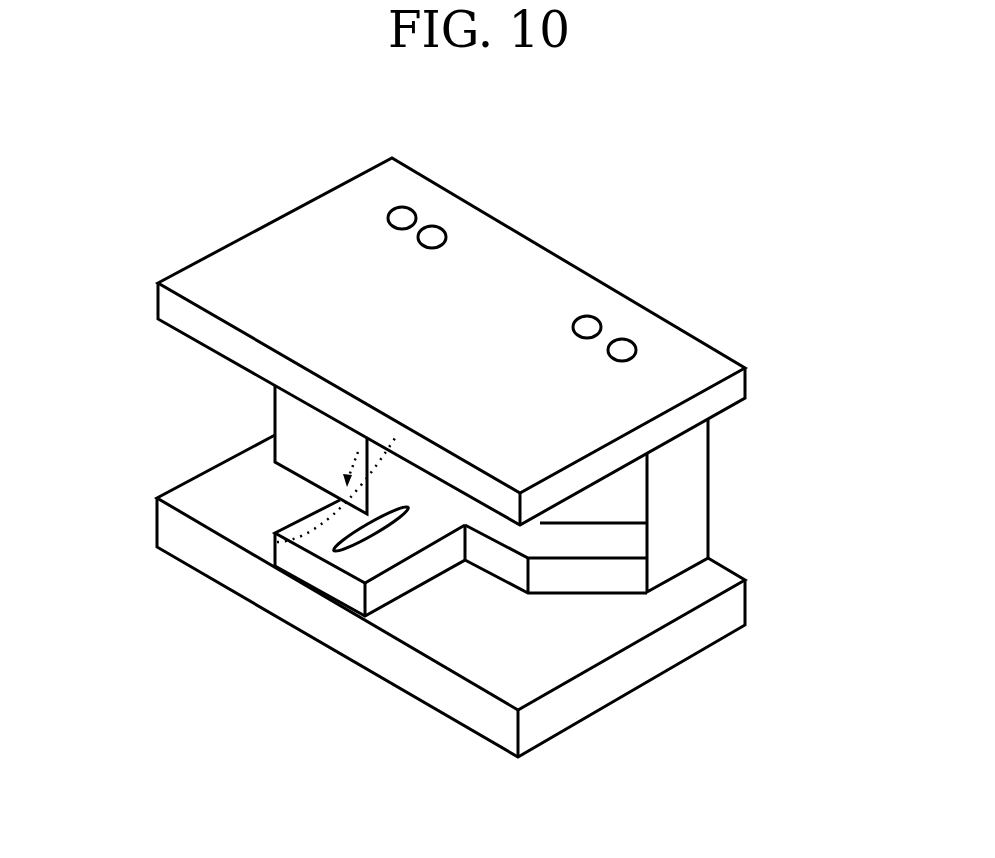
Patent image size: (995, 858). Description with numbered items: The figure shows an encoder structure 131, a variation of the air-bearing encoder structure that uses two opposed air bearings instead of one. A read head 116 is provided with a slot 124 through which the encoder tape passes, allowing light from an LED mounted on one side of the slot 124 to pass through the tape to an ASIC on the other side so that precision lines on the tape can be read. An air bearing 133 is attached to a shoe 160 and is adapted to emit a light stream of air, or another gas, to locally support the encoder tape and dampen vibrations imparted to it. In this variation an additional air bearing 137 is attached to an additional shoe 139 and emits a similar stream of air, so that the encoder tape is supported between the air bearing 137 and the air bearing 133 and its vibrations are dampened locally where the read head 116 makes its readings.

The encoder structure 131 is at (193, 200).
The additional shoe 139 is at (730, 392).
The read head 116 is at (710, 532).
The shoe 160 is at (567, 698).
The air bearing 133 is at (337, 552).
The slot 124 is at (560, 542).
The additional air bearing 137 is at (277, 542).